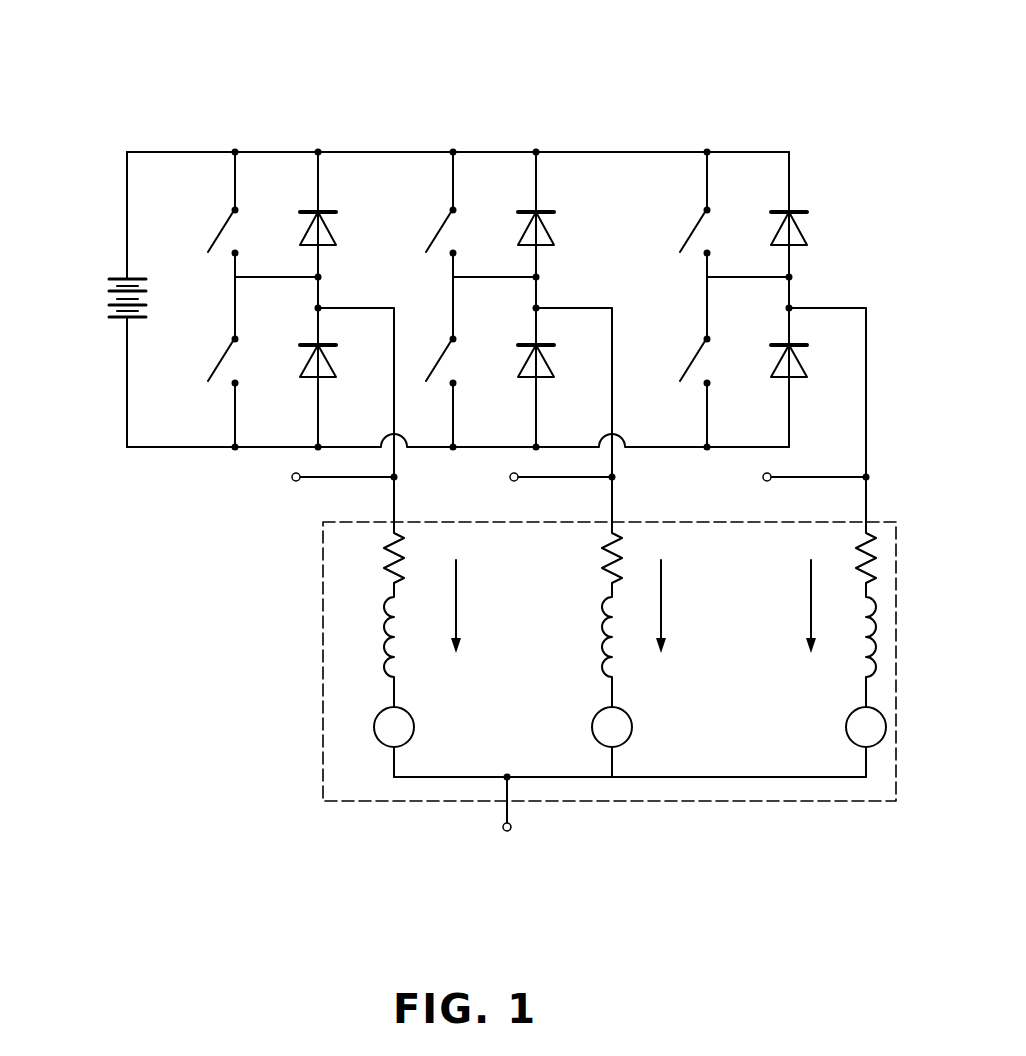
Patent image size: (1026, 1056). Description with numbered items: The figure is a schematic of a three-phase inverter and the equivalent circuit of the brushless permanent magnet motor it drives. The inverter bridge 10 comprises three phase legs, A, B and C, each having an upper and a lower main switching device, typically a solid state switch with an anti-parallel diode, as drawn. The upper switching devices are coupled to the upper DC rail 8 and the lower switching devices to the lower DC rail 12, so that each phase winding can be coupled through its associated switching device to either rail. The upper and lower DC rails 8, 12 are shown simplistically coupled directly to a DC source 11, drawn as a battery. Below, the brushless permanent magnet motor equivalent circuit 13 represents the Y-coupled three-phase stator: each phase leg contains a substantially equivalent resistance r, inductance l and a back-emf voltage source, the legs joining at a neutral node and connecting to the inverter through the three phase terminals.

The upper DC rail 8 is at (415, 150).
The inverter bridge 10 is at (563, 152).
The DC source 11 is at (117, 279).
The lower DC rail 12 is at (245, 450).
The brushless permanent magnet motor equivalent circuit 13 is at (322, 653).